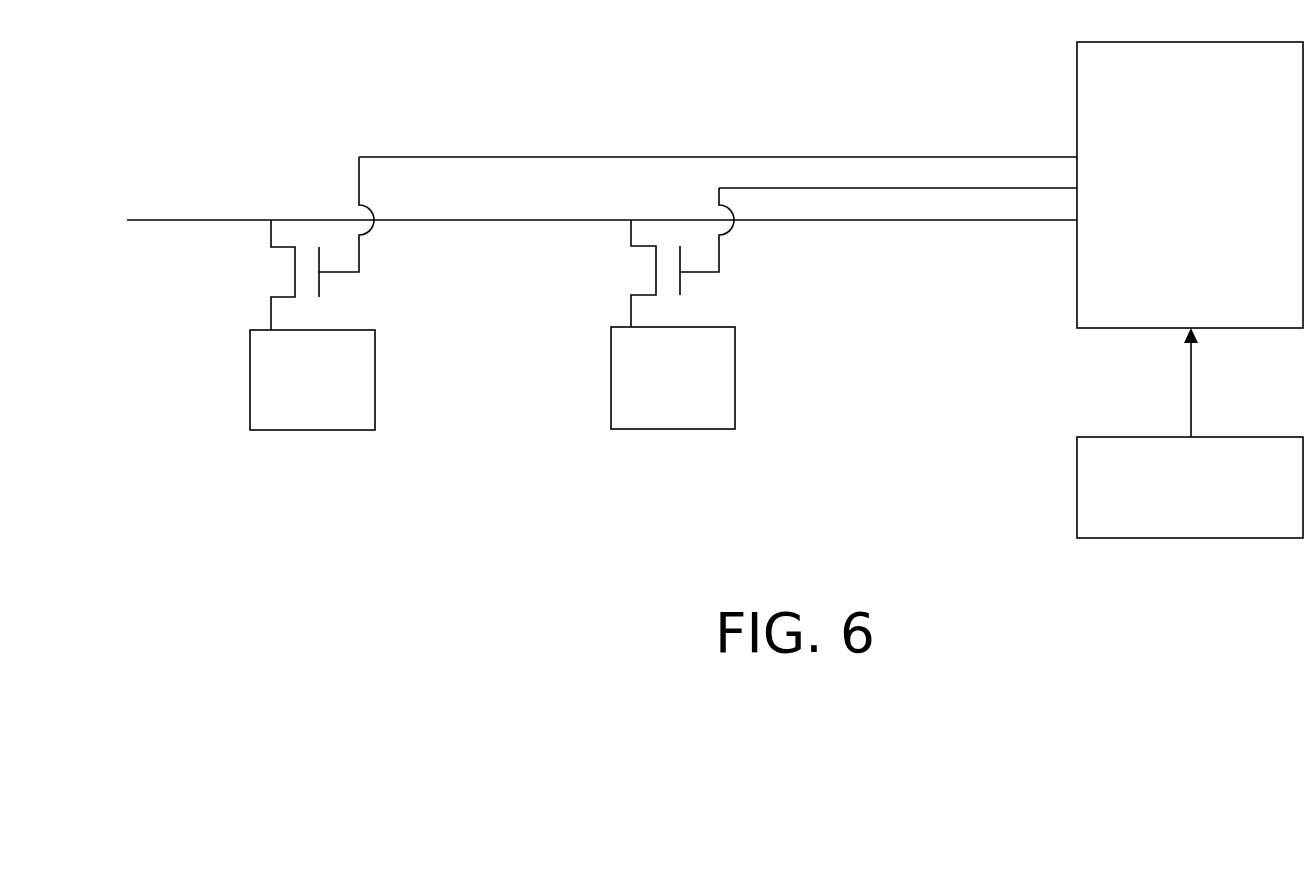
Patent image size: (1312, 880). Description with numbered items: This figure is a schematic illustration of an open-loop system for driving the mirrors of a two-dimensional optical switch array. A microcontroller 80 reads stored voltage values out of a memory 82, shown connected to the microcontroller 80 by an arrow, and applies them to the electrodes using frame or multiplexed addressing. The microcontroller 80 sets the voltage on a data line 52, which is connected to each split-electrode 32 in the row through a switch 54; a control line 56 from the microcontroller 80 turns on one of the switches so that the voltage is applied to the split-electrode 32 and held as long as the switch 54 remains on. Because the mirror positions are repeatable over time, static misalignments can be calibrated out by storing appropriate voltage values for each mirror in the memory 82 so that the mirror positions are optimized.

The split-electrode 32 is at (375, 380).
The data line 52 is at (890, 220).
The switch 54 is at (633, 271).
The control line 56 is at (805, 157).
The microcontroller 80 is at (1077, 98).
The memory 82 is at (1077, 493).